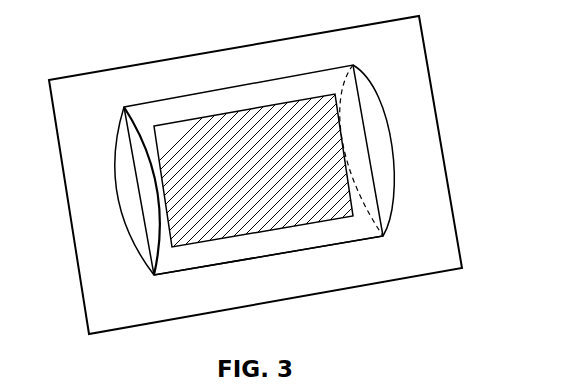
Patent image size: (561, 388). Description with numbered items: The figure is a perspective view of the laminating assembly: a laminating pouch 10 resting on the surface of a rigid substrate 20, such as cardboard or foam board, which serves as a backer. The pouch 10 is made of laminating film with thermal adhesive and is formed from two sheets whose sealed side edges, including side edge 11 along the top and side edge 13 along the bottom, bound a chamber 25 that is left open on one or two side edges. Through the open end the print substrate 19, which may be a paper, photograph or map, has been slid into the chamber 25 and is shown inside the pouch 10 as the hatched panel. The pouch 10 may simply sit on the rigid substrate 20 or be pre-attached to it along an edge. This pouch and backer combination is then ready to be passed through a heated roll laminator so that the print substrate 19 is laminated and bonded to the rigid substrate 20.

The laminating pouch 10 is at (392, 145).
The side edge 11 is at (197, 93).
The side edge 13 is at (260, 257).
The print substrate 19 is at (263, 118).
The rigid substrate 20 is at (450, 198).
The chamber 25 is at (147, 230).